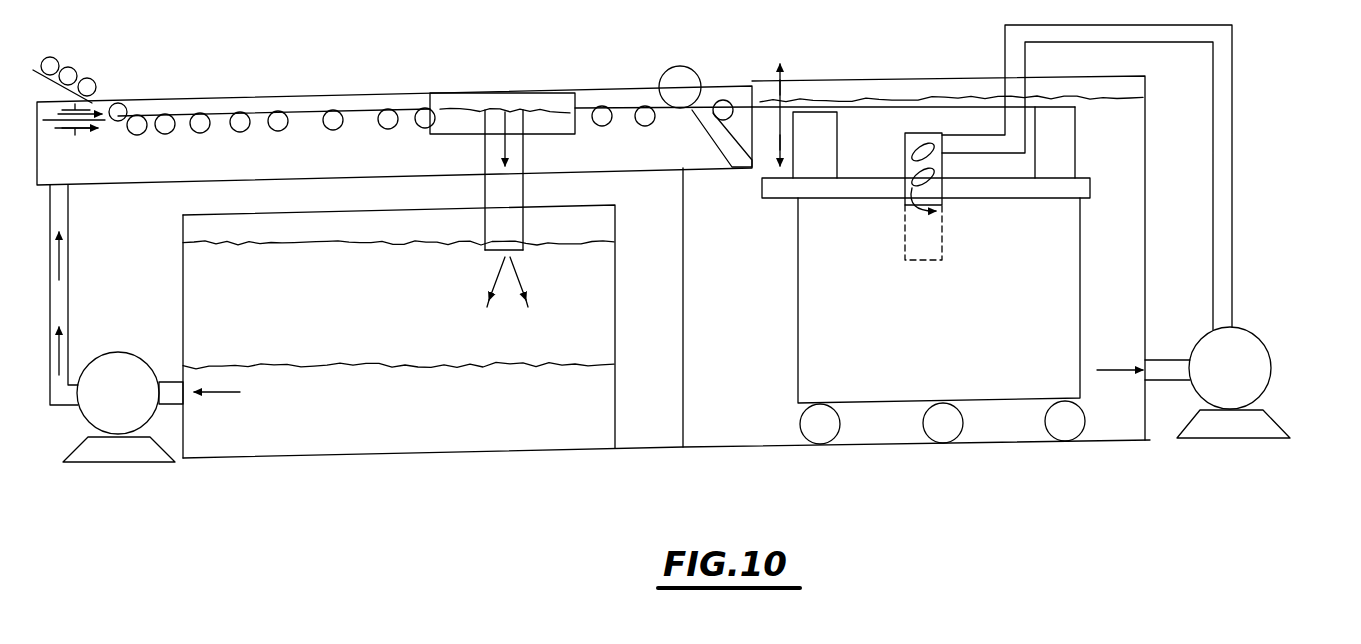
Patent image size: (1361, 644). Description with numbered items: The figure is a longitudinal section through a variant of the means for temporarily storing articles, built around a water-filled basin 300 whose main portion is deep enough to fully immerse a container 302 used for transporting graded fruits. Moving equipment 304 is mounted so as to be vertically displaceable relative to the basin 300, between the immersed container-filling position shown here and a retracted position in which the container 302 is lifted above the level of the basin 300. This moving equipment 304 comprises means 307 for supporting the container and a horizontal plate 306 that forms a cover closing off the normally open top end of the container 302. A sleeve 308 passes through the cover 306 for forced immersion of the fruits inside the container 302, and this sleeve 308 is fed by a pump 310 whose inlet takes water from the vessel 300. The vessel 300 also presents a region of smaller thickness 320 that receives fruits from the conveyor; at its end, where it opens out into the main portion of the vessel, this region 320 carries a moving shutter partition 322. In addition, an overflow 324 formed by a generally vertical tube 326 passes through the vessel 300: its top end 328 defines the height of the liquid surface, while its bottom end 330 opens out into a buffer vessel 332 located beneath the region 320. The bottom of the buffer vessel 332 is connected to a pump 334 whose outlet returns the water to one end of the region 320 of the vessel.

The water-filled basin 300 is at (1097, 110).
The container 302 is at (1073, 292).
The moving equipment 304 is at (1057, 143).
The horizontal plate 306 is at (1072, 182).
The container supporting means 307 is at (945, 445).
The sleeve 308 is at (905, 150).
The pump 310 is at (1225, 372).
The region of smaller thickness 320 is at (256, 172).
The moving shutter partition 322 is at (698, 88).
The overflow 324 is at (530, 149).
The vertical tube 326 is at (485, 163).
The top end 328 is at (478, 110).
The bottom end 330 is at (487, 255).
The buffer vessel 332 is at (617, 270).
The pump 334 is at (115, 378).